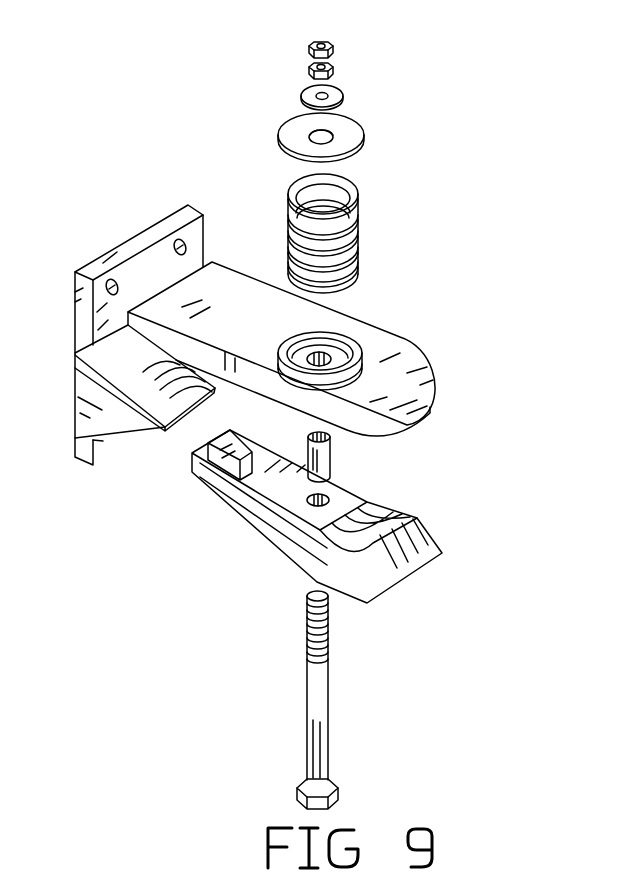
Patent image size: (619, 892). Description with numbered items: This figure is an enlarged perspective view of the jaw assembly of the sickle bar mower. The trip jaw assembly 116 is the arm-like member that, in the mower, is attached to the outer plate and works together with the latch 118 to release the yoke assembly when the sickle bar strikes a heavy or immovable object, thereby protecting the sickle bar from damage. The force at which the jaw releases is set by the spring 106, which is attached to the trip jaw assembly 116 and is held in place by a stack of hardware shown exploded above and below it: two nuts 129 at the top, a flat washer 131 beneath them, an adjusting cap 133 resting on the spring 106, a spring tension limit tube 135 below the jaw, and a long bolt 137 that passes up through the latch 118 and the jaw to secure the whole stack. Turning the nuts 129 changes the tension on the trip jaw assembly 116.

The nuts 129 is at (337, 70).
The flat washer 131 is at (350, 97).
The adjusting cap 133 is at (372, 147).
The spring 106 is at (364, 240).
The trip jaw assembly 116 is at (440, 369).
The spring tension limit tube 135 is at (341, 463).
The latch 118 is at (392, 592).
The bolt 137 is at (335, 709).